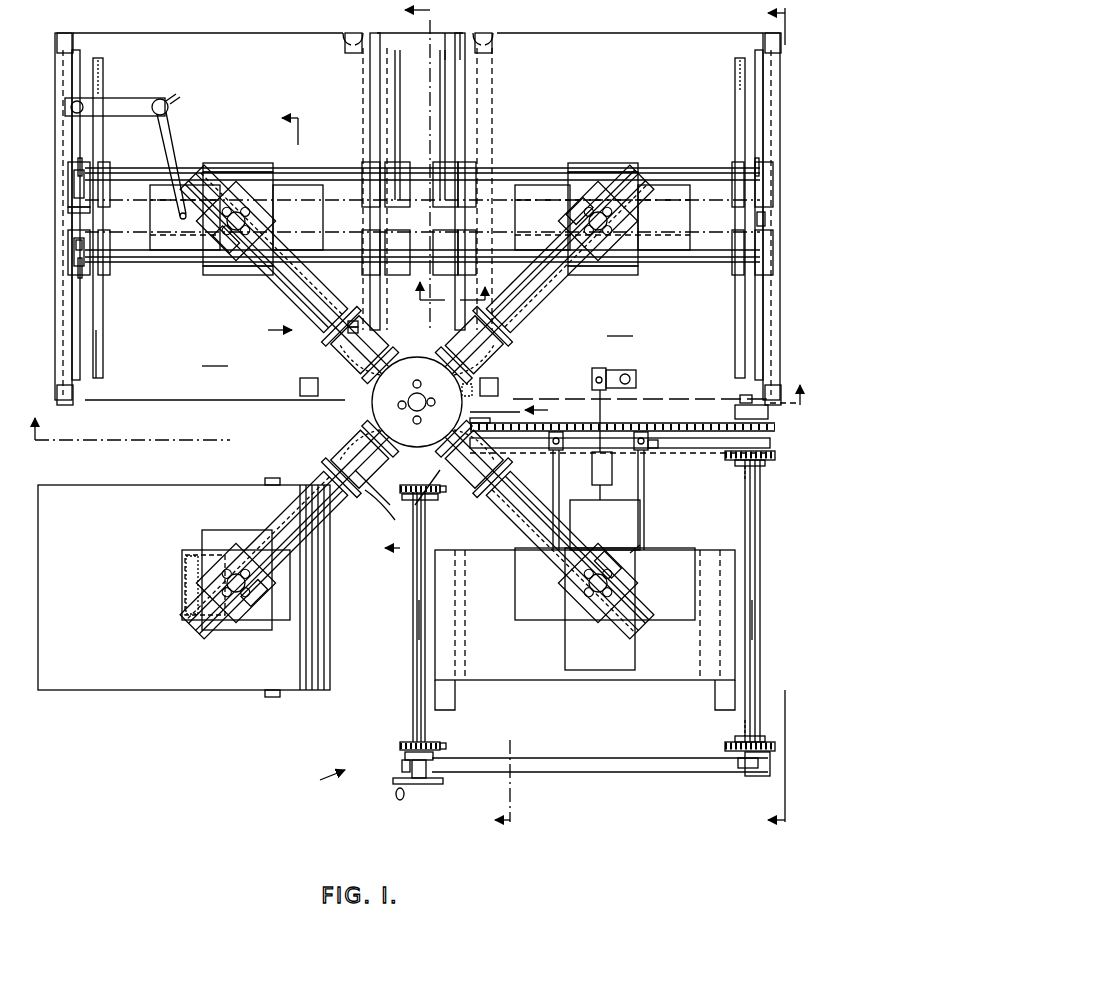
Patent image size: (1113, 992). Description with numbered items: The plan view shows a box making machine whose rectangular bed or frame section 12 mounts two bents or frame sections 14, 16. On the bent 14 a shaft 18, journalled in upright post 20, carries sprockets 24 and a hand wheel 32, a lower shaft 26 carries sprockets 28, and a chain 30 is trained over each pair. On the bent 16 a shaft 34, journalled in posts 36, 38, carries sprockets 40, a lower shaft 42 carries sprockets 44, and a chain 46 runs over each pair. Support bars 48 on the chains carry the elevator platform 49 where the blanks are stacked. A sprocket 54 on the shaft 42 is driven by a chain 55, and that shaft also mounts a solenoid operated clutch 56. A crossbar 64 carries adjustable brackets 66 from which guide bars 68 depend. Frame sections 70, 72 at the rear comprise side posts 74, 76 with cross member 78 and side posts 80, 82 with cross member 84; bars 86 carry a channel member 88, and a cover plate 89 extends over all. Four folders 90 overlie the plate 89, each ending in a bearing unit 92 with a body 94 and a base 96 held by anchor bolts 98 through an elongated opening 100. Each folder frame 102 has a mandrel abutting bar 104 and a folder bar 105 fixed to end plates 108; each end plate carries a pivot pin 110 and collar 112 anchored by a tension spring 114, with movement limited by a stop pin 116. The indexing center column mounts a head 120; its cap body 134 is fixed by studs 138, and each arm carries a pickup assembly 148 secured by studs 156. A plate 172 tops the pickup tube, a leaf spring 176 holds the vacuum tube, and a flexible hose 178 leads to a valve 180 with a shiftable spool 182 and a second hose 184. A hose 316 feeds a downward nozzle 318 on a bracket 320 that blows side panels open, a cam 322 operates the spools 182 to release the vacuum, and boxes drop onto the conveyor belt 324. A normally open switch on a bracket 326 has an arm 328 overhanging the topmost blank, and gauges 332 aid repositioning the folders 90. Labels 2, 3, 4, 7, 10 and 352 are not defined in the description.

The section line 2- 2 is at (766, 416).
The section line 3- 3 is at (417, 396).
The section line 4- 4 is at (400, 280).
The section line 7- 7 is at (452, 279).
The view direction 10 is at (269, 223).
The bed or frame section 12 is at (578, 790).
The bent or frame section 14 is at (426, 617).
The bent or frame section 16 is at (772, 682).
The shaft 18 is at (414, 684).
The upright post 20 is at (410, 770).
The chain sprockets 24 is at (410, 495).
The shaft 26 is at (414, 636).
The chain sprockets 28 is at (450, 498).
The chain 30 is at (410, 502).
The hand wheel 32 is at (426, 786).
The shaft 34 is at (756, 560).
The post 36 is at (760, 770).
The post 38 is at (770, 443).
The chain sprockets 40 is at (765, 462).
The shaft 42 is at (756, 608).
The chain sprockets 44 is at (762, 470).
The chain 46 is at (775, 456).
The support bar 48 is at (456, 705).
The elevator platform 49 is at (655, 680).
The sprocket 54 is at (776, 427).
The chain 55 is at (685, 424).
The solenoid operated clutch 56 is at (735, 412).
The crossbar 64 is at (660, 448).
The brackets 66 is at (553, 470).
The guide bars 68 is at (642, 545).
The frame section 70 is at (128, 318).
The frame section 72 is at (362, 140).
The side post 74 is at (65, 404).
The side post 76 is at (66, 32).
The cross member 78 is at (58, 52).
The side post 80 is at (495, 410).
The side post 82 is at (355, 32).
The cross member 84 is at (356, 52).
The bar 86 is at (470, 34).
The channel member 88 is at (443, 36).
The cover plate 89 is at (417, 342).
The folders 90 is at (130, 162).
The bearing unit 92 is at (62, 172).
The body 94 is at (86, 202).
The base 96 is at (70, 195).
The anchor bolts 98 is at (765, 182).
The elongated opening 100 is at (76, 75).
The frame 102 is at (76, 245).
The mandrel abutting bar 104 is at (278, 212).
The folder bar 105 is at (308, 170).
The end plates 108 is at (105, 275).
The pivot pin 110 is at (375, 250).
The collar 112 is at (765, 236).
The tension spring 114 is at (78, 160).
The stop pin 116 is at (105, 207).
The head 120 is at (498, 384).
The body 134 is at (417, 402).
The studs 138 is at (425, 420).
The pickup assembly 148 is at (190, 618).
The studs 156 is at (212, 586).
The plate 172 is at (255, 178).
The leaf spring 176 is at (228, 235).
The flexible hose 178 is at (262, 282).
The valve 180 is at (380, 338).
The spool 182 is at (375, 322).
The flexible hose 184 is at (423, 374).
The hose 316 is at (172, 93).
The nozzle 318 is at (172, 140).
The bracket 320 is at (118, 98).
The cam 322 is at (372, 505).
The belt 324 is at (147, 675).
The bracket 326 is at (592, 380).
The arm 328 is at (615, 490).
The gauges 332 is at (738, 345).
The bar 352 is at (103, 352).